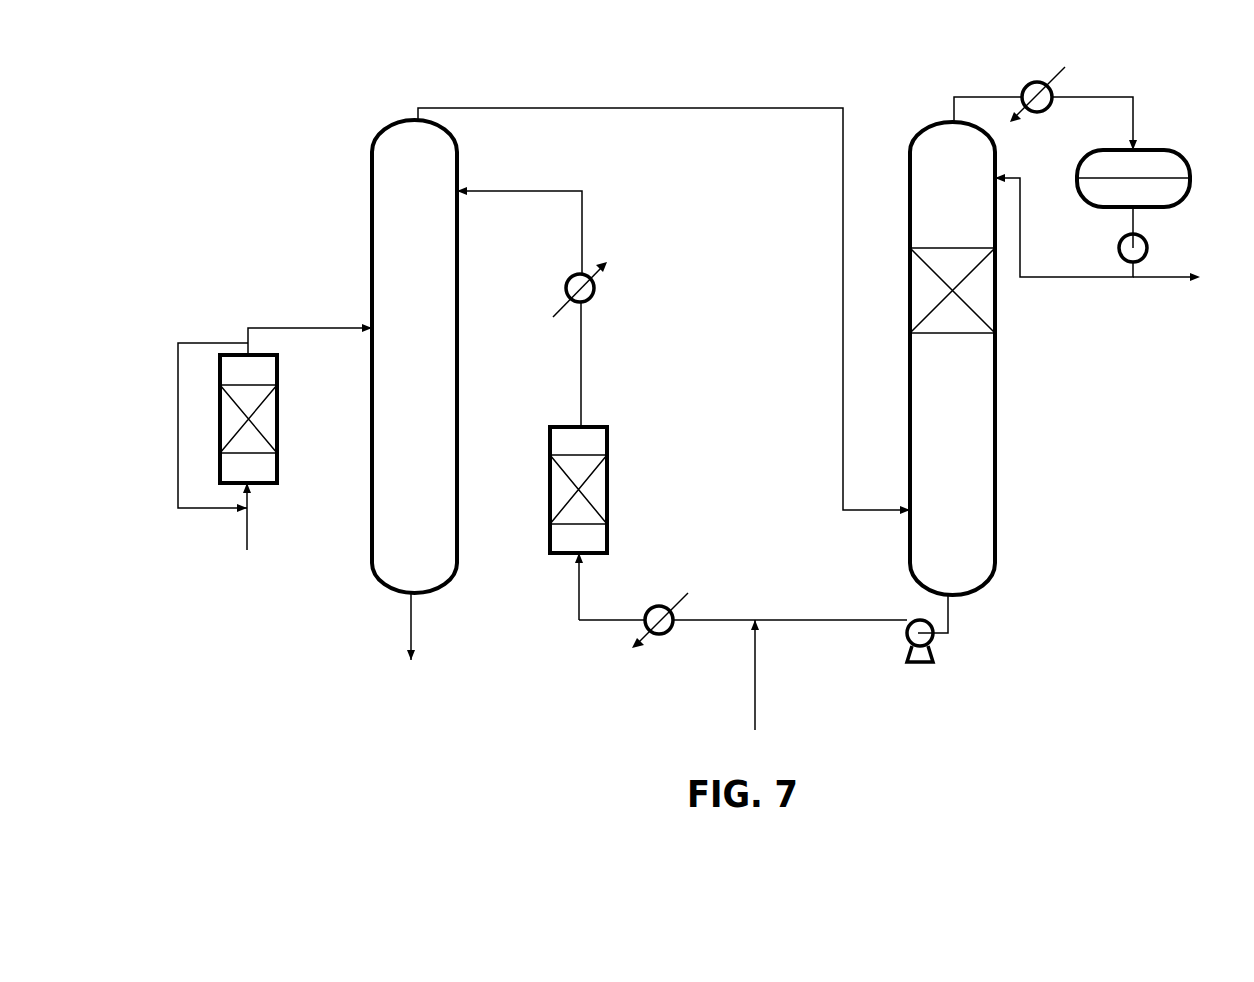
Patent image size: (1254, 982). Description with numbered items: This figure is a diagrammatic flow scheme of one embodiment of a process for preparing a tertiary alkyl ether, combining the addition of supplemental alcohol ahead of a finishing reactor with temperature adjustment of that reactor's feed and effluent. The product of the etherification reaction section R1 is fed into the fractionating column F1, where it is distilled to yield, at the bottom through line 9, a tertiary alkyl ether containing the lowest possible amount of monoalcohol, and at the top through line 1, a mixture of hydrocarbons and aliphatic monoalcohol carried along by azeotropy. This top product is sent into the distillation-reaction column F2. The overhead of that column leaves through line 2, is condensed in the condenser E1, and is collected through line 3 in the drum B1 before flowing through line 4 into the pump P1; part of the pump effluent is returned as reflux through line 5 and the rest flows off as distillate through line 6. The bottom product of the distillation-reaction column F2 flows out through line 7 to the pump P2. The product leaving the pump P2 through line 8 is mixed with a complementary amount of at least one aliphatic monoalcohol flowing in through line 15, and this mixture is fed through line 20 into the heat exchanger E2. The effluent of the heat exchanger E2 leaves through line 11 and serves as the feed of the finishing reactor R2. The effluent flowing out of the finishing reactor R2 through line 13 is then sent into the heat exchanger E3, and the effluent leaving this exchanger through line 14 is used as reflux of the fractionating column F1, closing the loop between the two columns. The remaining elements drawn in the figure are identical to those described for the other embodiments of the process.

The line 1 is at (735, 107).
The line 2 is at (967, 93).
The line 3 is at (1107, 93).
The line 4 is at (1133, 218).
The line 5 is at (1033, 278).
The line 6 is at (1175, 278).
The line 7 is at (948, 607).
The line 8 is at (880, 621).
The line 9 is at (408, 610).
The line 11 is at (592, 622).
The line 13 is at (582, 358).
The line 14 is at (543, 188).
The line 15 is at (755, 690).
The line 20 is at (702, 618).
The fractionating column F1 is at (414, 356).
The distillation-reaction column F2 is at (952, 358).
The etherification reaction section R1 is at (275, 437).
The finishing reactor R2 is at (599, 490).
The condenser E1 is at (1031, 94).
The heat exchanger E2 is at (660, 635).
The heat exchanger E3 is at (593, 289).
The drum B1 is at (1121, 175).
The pump P1 is at (1119, 244).
The pump P2 is at (919, 661).